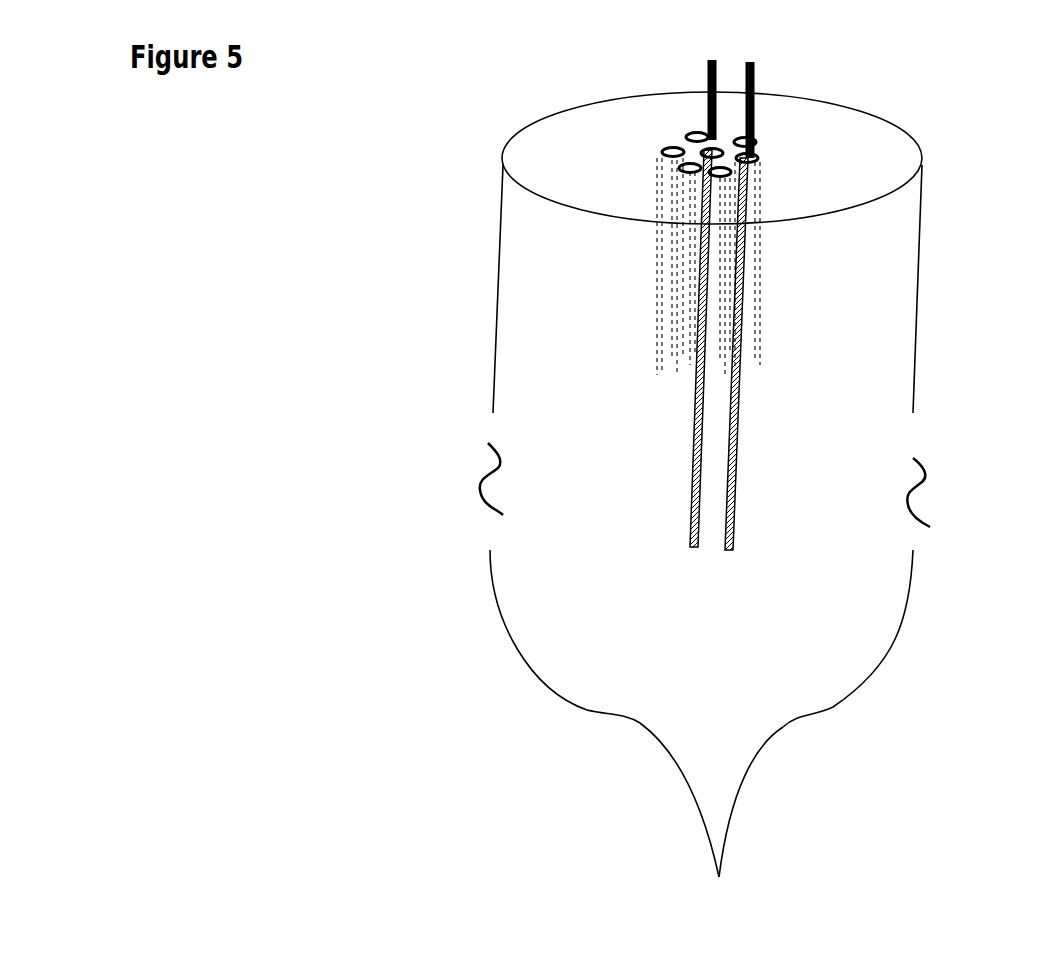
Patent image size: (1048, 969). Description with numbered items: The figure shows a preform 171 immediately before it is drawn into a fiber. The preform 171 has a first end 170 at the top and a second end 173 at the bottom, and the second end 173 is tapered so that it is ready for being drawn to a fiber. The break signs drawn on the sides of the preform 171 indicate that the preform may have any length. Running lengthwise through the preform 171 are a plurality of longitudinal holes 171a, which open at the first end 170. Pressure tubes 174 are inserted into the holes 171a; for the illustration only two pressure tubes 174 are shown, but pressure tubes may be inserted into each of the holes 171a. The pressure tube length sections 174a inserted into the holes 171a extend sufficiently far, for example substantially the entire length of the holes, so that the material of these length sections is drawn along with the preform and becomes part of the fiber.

The first end 170 is at (555, 168).
The preform 171 is at (525, 315).
The longitudinal holes 171a is at (762, 157).
The second end 173 is at (668, 837).
The pressure tubes 174 is at (762, 80).
The pressure tube length sections 174a is at (745, 437).